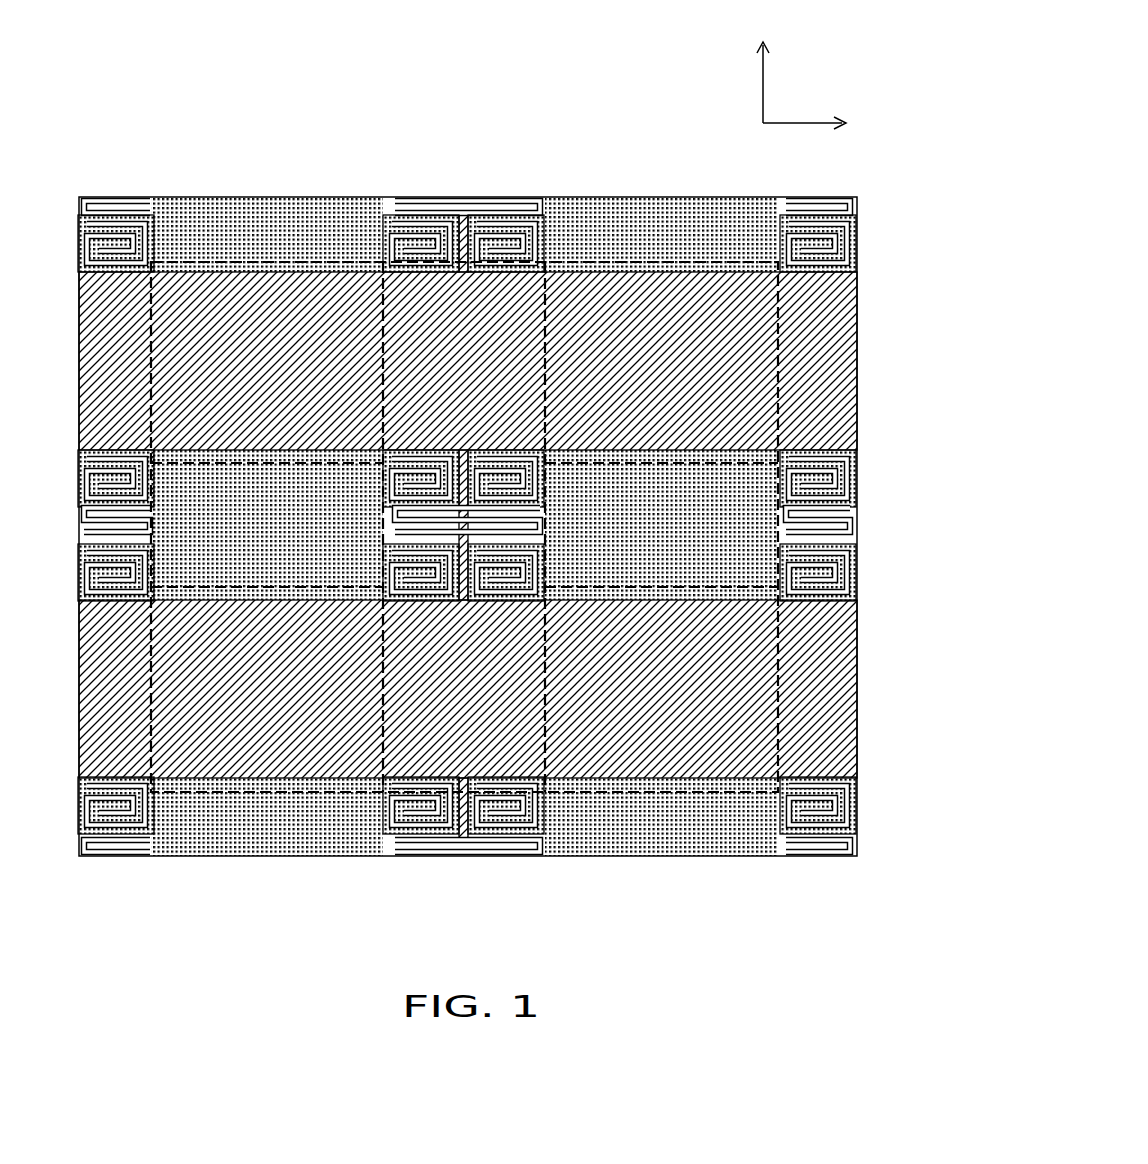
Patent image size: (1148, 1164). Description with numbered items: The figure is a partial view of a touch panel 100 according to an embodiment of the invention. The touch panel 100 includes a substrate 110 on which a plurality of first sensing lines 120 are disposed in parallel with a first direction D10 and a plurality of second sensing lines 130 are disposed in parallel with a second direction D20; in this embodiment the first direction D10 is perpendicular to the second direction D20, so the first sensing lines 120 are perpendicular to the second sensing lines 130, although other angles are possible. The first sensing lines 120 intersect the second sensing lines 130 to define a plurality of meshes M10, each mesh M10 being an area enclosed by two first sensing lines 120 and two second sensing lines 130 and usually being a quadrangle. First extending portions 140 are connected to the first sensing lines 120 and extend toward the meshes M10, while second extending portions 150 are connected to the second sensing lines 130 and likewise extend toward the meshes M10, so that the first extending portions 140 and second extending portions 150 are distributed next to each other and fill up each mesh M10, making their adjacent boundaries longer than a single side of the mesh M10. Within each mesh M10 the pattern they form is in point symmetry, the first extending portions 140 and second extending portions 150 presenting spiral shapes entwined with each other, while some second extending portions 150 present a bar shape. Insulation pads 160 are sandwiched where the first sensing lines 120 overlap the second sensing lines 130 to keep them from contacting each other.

The touch panel 100 is at (866, 940).
The substrate 110 is at (858, 285).
The first sensing lines 120 is at (815, 350).
The second sensing lines 130 is at (653, 215).
The first extending portions 140 is at (464, 450).
The second extending portions 150 is at (530, 485).
The insulation pads 160 is at (245, 792).
The mesh M10 is at (378, 484).
The first direction D10 is at (827, 127).
The second direction D20 is at (764, 66).